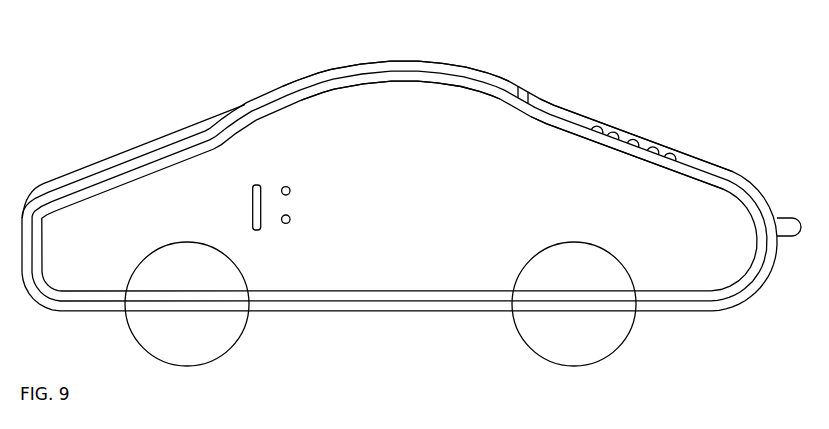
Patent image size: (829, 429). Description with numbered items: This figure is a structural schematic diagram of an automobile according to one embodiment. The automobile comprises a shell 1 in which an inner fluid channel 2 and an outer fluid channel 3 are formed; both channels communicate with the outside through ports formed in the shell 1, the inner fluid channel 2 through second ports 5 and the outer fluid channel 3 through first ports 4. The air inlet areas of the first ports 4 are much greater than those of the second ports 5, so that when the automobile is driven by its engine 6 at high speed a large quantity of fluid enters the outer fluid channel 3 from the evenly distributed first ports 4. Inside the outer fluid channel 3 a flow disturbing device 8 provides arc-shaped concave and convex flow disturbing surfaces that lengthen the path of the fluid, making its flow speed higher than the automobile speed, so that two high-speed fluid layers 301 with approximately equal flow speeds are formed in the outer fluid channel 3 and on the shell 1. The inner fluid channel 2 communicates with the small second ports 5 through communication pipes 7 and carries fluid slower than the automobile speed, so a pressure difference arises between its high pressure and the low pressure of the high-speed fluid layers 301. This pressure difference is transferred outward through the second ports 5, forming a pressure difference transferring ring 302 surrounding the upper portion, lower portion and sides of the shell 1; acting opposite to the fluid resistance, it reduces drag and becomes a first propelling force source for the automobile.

The shell 1 is at (216, 39).
The inner fluid channel 2 is at (345, 39).
The outer fluid channel 3 is at (320, 39).
The high-speed fluid layer 301 is at (519, 39).
The pressure difference transferring ring 302 is at (640, 39).
The first port 4 is at (259, 230).
The second port 5 is at (288, 223).
The engine 6 is at (827, 152).
The communication pipe 7 is at (545, 39).
The flow disturbing device 8 is at (666, 39).